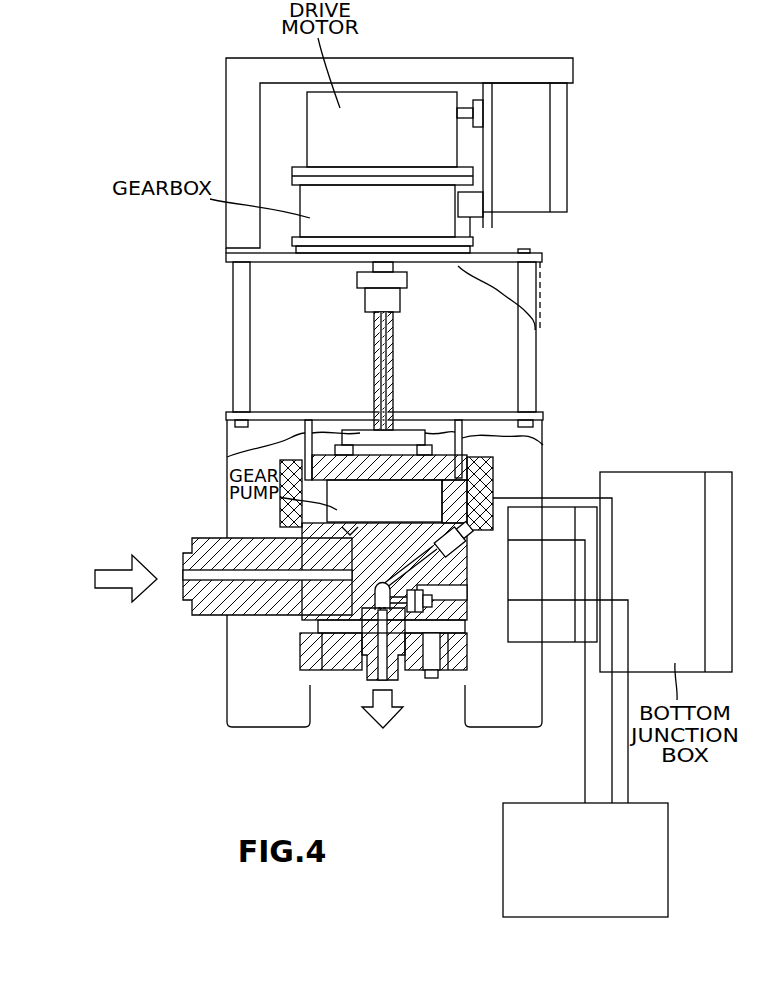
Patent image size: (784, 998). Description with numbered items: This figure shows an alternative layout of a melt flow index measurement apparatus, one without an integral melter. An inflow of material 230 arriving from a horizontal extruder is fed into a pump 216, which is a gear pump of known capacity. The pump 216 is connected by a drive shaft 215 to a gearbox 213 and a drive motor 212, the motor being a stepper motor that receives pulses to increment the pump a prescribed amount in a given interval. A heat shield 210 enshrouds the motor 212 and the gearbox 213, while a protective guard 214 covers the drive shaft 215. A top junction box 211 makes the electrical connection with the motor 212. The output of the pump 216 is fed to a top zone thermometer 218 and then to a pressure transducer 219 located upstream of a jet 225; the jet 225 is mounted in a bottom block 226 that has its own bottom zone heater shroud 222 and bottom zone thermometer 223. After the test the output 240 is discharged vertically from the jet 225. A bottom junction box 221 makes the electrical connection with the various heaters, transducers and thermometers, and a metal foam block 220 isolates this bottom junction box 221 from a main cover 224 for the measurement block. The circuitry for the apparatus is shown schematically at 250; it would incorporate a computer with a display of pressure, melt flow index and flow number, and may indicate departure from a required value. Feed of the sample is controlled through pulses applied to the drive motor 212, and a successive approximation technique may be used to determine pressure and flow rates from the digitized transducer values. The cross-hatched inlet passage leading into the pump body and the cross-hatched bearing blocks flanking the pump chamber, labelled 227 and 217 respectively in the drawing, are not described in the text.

The heat shield 210 is at (578, 80).
The top junction box 211 is at (562, 123).
The drive motor 212 is at (443, 150).
The gearbox 213 is at (450, 225).
The protective guard 214 is at (542, 290).
The drive shaft 215 is at (393, 368).
The pump 216 is at (443, 492).
The bearing 217 is at (487, 488).
The top zone thermometer 218 is at (470, 540).
The pressure transducer 219 is at (432, 597).
The metal foam block 220 is at (592, 607).
The bottom junction box 221 is at (647, 582).
The bottom zone heater shroud 222 is at (460, 650).
The bottom zone thermometer 223 is at (438, 678).
The main cover 224 is at (283, 728).
The jet 225 is at (367, 675).
The bottom block 226 is at (327, 660).
The inlet pipe 227 is at (215, 550).
The inflow of material 230 is at (97, 578).
The output 240 is at (382, 722).
The circuitry 250 is at (610, 908).